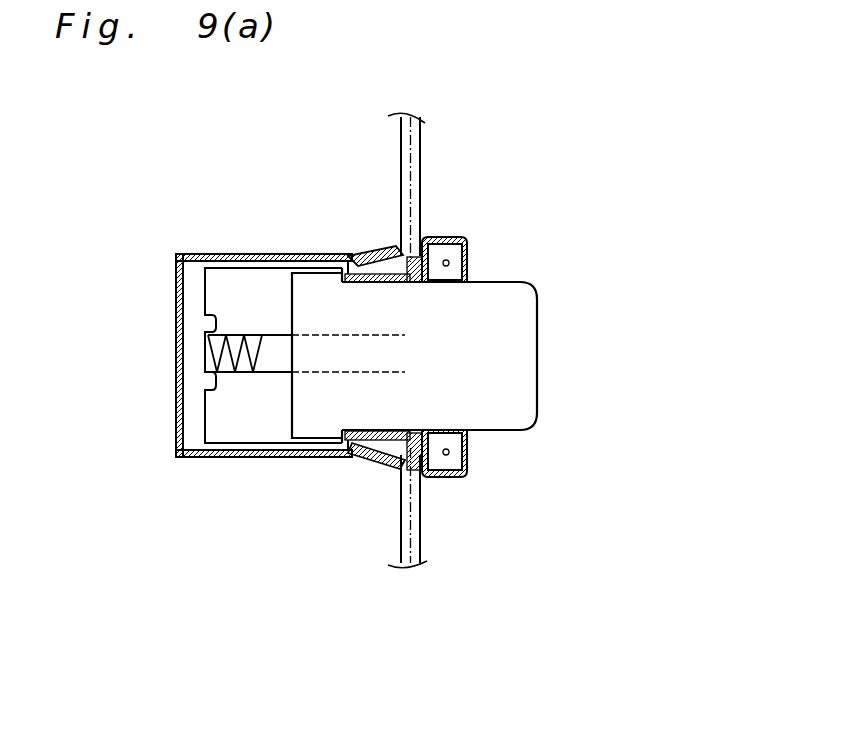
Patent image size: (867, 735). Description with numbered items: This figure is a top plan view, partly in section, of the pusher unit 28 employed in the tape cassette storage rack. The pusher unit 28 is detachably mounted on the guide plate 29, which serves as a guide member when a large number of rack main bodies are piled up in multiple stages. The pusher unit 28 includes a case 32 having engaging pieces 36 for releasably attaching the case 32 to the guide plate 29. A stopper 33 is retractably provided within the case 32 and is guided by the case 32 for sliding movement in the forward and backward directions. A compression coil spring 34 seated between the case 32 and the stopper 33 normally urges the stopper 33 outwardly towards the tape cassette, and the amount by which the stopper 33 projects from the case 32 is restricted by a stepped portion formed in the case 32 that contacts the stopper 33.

The pusher unit 28 is at (435, 349).
The guide plate 29 is at (408, 165).
The case 32 is at (232, 457).
The stopper 33 is at (478, 358).
The compression coil spring 34 is at (267, 355).
The engaging pieces 36 is at (358, 446).